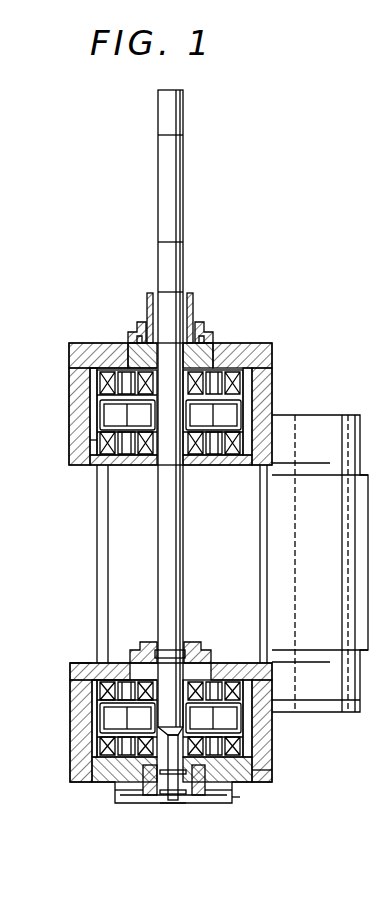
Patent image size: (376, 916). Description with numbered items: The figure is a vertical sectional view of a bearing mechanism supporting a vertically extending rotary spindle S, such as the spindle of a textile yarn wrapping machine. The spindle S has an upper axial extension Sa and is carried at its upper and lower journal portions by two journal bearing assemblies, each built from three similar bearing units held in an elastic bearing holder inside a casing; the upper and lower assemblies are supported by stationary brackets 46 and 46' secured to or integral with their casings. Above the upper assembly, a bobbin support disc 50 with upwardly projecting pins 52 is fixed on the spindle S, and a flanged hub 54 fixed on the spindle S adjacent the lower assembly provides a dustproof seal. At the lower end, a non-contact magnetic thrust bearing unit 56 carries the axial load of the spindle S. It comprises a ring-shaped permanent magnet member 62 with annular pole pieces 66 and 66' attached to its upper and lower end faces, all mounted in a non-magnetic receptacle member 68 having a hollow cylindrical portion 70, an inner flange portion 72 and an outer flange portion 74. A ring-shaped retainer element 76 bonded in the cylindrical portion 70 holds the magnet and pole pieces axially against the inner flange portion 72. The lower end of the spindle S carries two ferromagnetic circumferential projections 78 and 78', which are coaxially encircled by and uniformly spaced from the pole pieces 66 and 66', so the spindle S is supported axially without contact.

The upper axial extension Sa is at (196, 412).
The rotary spindle S is at (190, 570).
The stationary bracket 46 is at (320, 542).
The stationary bracket 46' is at (318, 726).
The bobbin support disc 50 is at (205, 333).
The pins 52 is at (190, 300).
The flanged hub 54 is at (188, 652).
The magnetic thrust bearing unit 56 is at (170, 812).
The permanent magnet member 62 is at (114, 798).
The upper pole piece 66 is at (126, 800).
The lower pole piece 66' is at (218, 805).
The receptacle member 68 is at (236, 806).
The hollow cylindrical portion 70 is at (274, 788).
The inner flange portion 72 is at (168, 802).
The outer flange portion 74 is at (240, 796).
The retainer element 76 is at (100, 792).
The circumferential projection 78 is at (187, 827).
The circumferential projection 78' is at (177, 823).